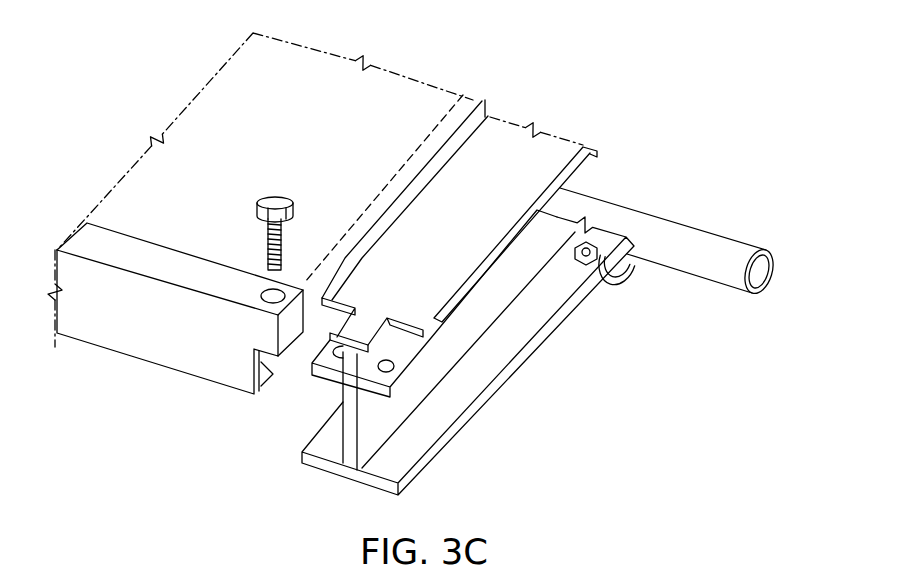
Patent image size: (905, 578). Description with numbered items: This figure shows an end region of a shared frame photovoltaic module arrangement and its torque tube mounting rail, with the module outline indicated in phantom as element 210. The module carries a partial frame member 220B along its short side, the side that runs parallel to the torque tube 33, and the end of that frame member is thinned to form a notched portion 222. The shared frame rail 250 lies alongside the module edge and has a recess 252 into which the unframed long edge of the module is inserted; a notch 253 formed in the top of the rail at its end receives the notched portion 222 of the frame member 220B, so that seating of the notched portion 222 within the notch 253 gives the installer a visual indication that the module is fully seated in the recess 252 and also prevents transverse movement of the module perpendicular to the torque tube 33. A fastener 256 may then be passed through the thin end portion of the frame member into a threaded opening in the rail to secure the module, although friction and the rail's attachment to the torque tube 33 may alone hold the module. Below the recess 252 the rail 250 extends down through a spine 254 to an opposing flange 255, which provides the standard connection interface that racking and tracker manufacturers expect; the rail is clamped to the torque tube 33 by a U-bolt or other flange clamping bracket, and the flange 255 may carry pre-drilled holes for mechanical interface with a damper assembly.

The housing/frame (phantom) 210 is at (240, 167).
The partial frame member 220B is at (182, 343).
The notched portion 222 is at (285, 378).
The bolt 256 is at (271, 197).
The shared frame rail 250 is at (477, 216).
The recess 252 is at (490, 274).
The notch 253 is at (403, 345).
The spine 254 is at (348, 452).
The flange 255 is at (415, 437).
The torque tube 33 is at (703, 228).